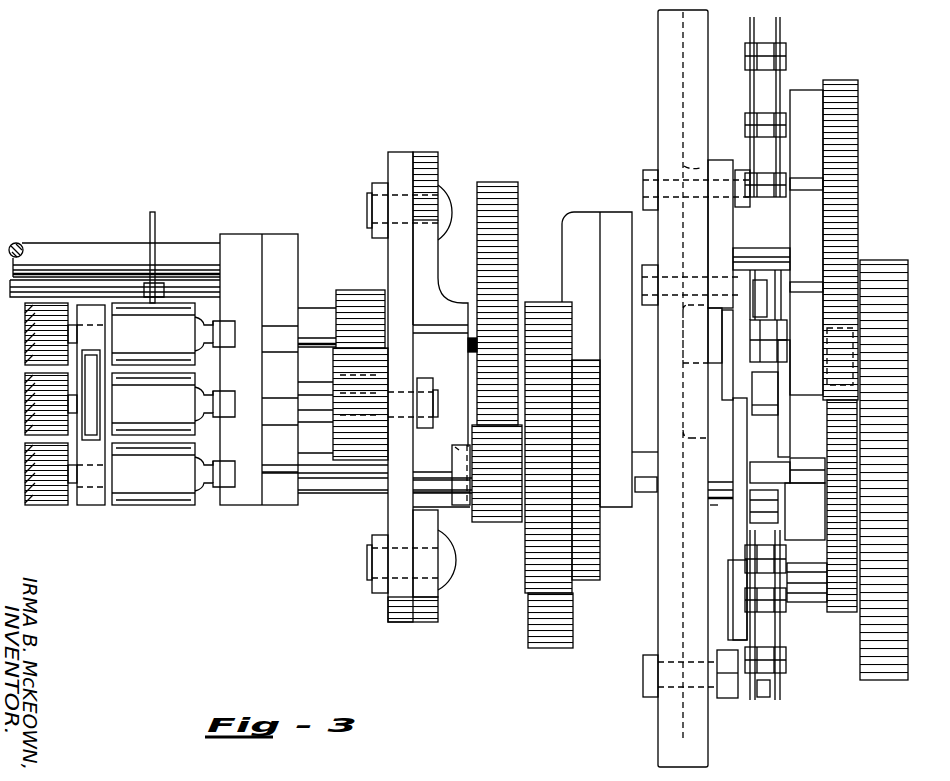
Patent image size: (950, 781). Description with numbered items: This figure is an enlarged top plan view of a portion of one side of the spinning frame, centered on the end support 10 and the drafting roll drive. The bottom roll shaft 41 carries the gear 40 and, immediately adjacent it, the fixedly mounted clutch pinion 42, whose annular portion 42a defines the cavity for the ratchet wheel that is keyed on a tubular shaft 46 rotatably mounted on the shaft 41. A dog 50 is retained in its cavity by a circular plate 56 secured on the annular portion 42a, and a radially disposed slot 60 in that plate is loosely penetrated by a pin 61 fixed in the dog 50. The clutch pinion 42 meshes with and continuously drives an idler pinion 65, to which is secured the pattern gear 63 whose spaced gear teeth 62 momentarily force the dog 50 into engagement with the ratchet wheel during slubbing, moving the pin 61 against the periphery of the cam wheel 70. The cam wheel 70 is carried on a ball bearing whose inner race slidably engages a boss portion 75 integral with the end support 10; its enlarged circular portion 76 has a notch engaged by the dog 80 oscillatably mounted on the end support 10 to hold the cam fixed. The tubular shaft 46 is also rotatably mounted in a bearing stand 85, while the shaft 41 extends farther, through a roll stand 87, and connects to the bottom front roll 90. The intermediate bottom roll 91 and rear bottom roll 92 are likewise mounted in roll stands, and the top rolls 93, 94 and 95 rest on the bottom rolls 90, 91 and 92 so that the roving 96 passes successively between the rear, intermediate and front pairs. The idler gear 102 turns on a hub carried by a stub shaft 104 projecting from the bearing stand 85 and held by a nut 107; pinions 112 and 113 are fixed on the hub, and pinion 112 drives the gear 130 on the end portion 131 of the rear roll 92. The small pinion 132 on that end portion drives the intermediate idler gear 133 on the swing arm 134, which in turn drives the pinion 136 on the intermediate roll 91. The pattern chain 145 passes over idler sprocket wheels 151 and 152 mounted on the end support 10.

The end support 10 is at (658, 626).
The gear 40 is at (906, 568).
The bottom roll shaft 41 is at (372, 492).
The clutch pinion 42 is at (840, 613).
The annular portion 42a is at (795, 603).
The tubular shaft 46 is at (645, 455).
The dog 50 is at (810, 483).
The circular plate 56 is at (778, 505).
The radially disposed slot 60 is at (793, 458).
The pin 61 is at (765, 462).
The gear teeth 62 is at (808, 190).
The pattern gear 63 is at (803, 95).
The idler pinion 65 is at (845, 82).
The cam wheel 70 is at (782, 432).
The boss portion 75 is at (716, 508).
The enlarged circular portion 76 is at (740, 464).
The dog 80 is at (770, 400).
The bearing stand 85 is at (626, 507).
The roll stand 87 is at (440, 616).
The bottom front roll 90 is at (195, 460).
The intermediate bottom roll 91 is at (195, 390).
The rear bottom roll 92 is at (195, 320).
The top roll 93 is at (153, 474).
The top roll 94 is at (153, 404).
The top roll 95 is at (153, 334).
The roving 96 is at (156, 225).
The idler gear 102 is at (556, 648).
The stub shaft 104 is at (452, 470).
The nut 107 is at (456, 435).
The pinion 112 is at (488, 522).
The pinion 113 is at (600, 576).
The gear 130 is at (497, 182).
The end portion 131 is at (316, 314).
The small pinion 132 is at (360, 290).
The intermediate idler gear 133 is at (380, 465).
The swing arm 134 is at (388, 155).
The pinion 136 is at (340, 444).
The pattern chain 145 is at (752, 97).
The idler sprocket wheel 151 is at (770, 362).
The idler sprocket wheel 152 is at (765, 700).